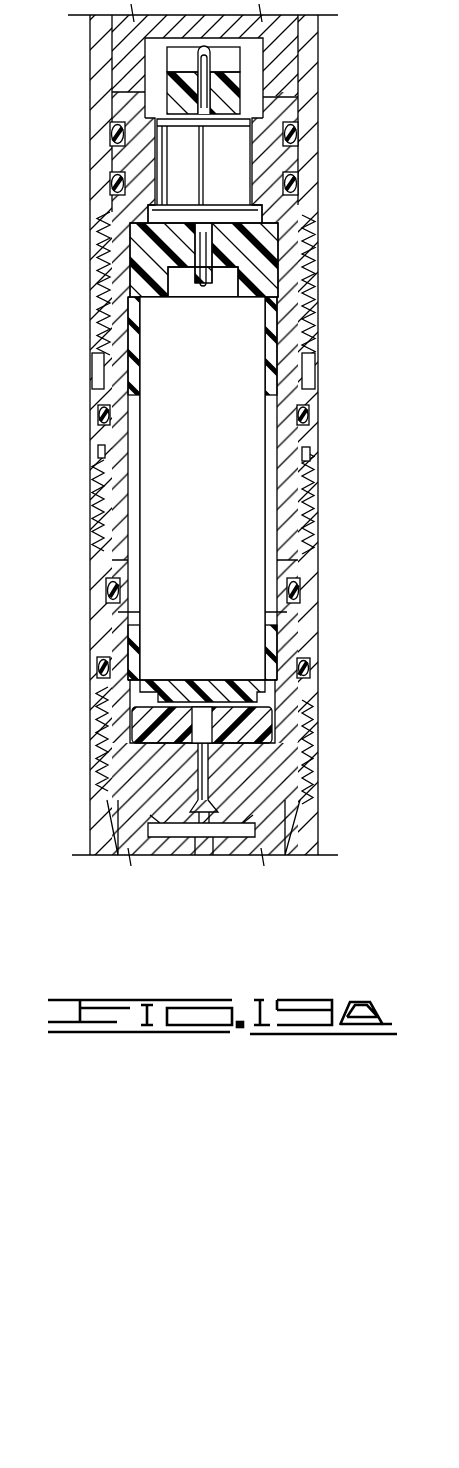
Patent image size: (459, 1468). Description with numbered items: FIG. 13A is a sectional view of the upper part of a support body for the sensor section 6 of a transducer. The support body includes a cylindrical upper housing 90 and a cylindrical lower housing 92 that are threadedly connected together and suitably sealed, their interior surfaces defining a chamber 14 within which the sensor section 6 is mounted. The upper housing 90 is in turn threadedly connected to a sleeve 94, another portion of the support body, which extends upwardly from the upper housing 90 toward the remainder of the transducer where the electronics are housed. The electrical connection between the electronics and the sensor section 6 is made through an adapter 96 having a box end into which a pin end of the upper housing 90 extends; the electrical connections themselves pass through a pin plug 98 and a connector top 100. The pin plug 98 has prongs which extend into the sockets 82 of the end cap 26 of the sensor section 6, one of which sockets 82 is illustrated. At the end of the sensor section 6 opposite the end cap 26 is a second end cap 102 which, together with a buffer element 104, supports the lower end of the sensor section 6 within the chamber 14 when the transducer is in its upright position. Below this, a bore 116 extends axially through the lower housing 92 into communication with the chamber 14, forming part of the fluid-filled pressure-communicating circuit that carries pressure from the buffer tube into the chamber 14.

The sensor section 6 is at (173, 489).
The chamber 14 is at (270, 443).
The end cap 26 is at (140, 277).
The socket 82 is at (198, 257).
The upper housing 90 is at (288, 263).
The lower housing 92 is at (295, 563).
The sleeve 94 is at (104, 53).
The adapter 96 is at (285, 55).
The pin plug 98 is at (235, 165).
The connector top 100 is at (227, 85).
The end cap 102 is at (240, 690).
The buffer element 104 is at (257, 727).
The bore 116 is at (192, 783).